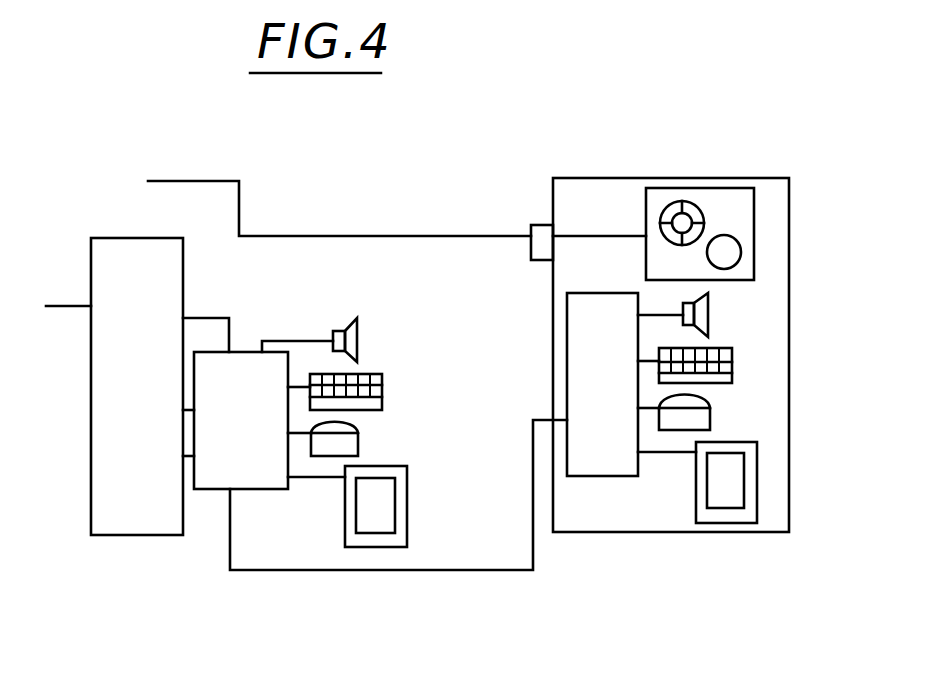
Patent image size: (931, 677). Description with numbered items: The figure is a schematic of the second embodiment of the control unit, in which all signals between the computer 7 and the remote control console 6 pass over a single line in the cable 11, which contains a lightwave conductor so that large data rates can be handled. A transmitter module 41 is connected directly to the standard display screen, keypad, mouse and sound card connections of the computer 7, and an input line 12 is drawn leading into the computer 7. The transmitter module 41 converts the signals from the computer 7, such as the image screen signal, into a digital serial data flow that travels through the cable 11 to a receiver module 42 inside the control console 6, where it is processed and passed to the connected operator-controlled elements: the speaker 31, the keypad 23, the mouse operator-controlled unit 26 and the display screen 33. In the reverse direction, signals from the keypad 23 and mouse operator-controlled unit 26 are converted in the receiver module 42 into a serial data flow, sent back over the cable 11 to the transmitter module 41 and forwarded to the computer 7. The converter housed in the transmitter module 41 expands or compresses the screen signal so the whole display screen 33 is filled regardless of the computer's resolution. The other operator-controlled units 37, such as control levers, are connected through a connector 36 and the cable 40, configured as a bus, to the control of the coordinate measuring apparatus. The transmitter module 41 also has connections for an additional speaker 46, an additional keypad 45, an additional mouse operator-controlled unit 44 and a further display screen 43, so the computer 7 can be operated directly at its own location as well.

The control console 6 is at (681, 538).
The computer 7 is at (115, 537).
The cable 11 is at (298, 572).
The input line 12 is at (46, 306).
The keypad 23 is at (732, 364).
The mouse operator-controlled unit 26 is at (710, 400).
The speaker 31 is at (708, 303).
The display screen 33 is at (744, 483).
The connector 36 is at (532, 225).
The other operator-controlled units 37 is at (754, 228).
The cable 40 is at (300, 236).
The transmitter module 41 is at (210, 491).
The receiver module 42 is at (592, 478).
The further display screen 43 is at (395, 505).
The additional mouse operator-controlled unit 44 is at (358, 428).
The additional keypad 45 is at (382, 392).
The additional speaker 46 is at (359, 330).